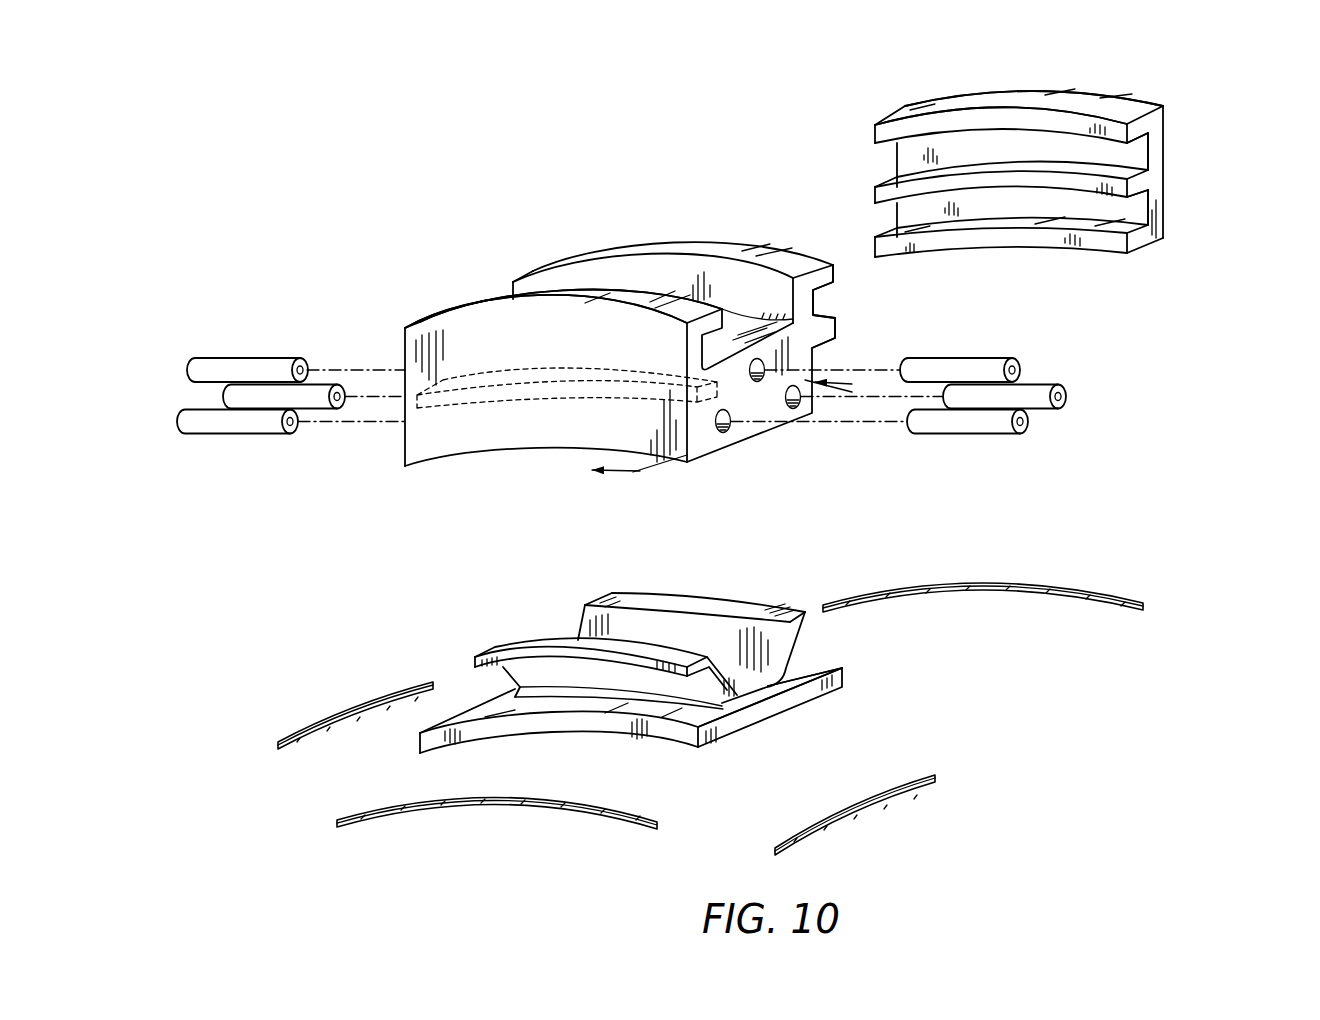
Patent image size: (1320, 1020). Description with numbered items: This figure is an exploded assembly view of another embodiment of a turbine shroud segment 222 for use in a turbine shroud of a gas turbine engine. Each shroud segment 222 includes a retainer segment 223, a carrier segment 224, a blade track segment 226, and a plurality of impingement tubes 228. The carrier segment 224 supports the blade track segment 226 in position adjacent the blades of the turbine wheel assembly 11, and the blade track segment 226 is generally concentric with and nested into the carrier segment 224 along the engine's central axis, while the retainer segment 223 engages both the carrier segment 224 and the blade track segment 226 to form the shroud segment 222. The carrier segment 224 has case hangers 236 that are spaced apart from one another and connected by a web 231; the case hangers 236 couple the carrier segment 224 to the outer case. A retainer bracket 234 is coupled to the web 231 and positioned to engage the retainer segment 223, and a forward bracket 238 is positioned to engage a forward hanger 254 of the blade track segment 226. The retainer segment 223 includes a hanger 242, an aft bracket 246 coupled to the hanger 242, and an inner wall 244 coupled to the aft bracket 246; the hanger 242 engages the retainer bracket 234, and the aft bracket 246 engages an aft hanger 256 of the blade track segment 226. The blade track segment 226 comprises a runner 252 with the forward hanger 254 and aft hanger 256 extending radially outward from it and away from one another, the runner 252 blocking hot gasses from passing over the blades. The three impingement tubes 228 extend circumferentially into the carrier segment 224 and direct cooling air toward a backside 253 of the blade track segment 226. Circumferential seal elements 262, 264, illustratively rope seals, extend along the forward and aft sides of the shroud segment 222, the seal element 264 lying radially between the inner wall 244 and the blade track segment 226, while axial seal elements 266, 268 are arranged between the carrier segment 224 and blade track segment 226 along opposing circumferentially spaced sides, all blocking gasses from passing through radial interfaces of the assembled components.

The turbine shroud segment 222 is at (220, 160).
The carrier segment 224 is at (430, 277).
The case hangers 236 is at (447, 303).
The web 231 is at (738, 312).
The retainer bracket 234 is at (838, 316).
The forward bracket 238 is at (466, 400).
The impingement tubes 228 is at (218, 396).
The turbine wheel assembly 11 is at (745, 432).
The retainer segment 223 is at (1127, 84).
The hanger 242 is at (1030, 88).
The aft bracket 246 is at (1124, 180).
The inner wall 244 is at (1120, 228).
The blade track segment 226 is at (798, 584).
The runner 252 is at (729, 728).
The backside 253 is at (810, 667).
The forward hanger 254 is at (508, 640).
The aft hanger 256 is at (740, 588).
The circumferential seal element 264 is at (1116, 594).
The axial seal element 266 is at (325, 712).
The circumferential seal element 262 is at (546, 820).
The axial seal element 268 is at (882, 792).